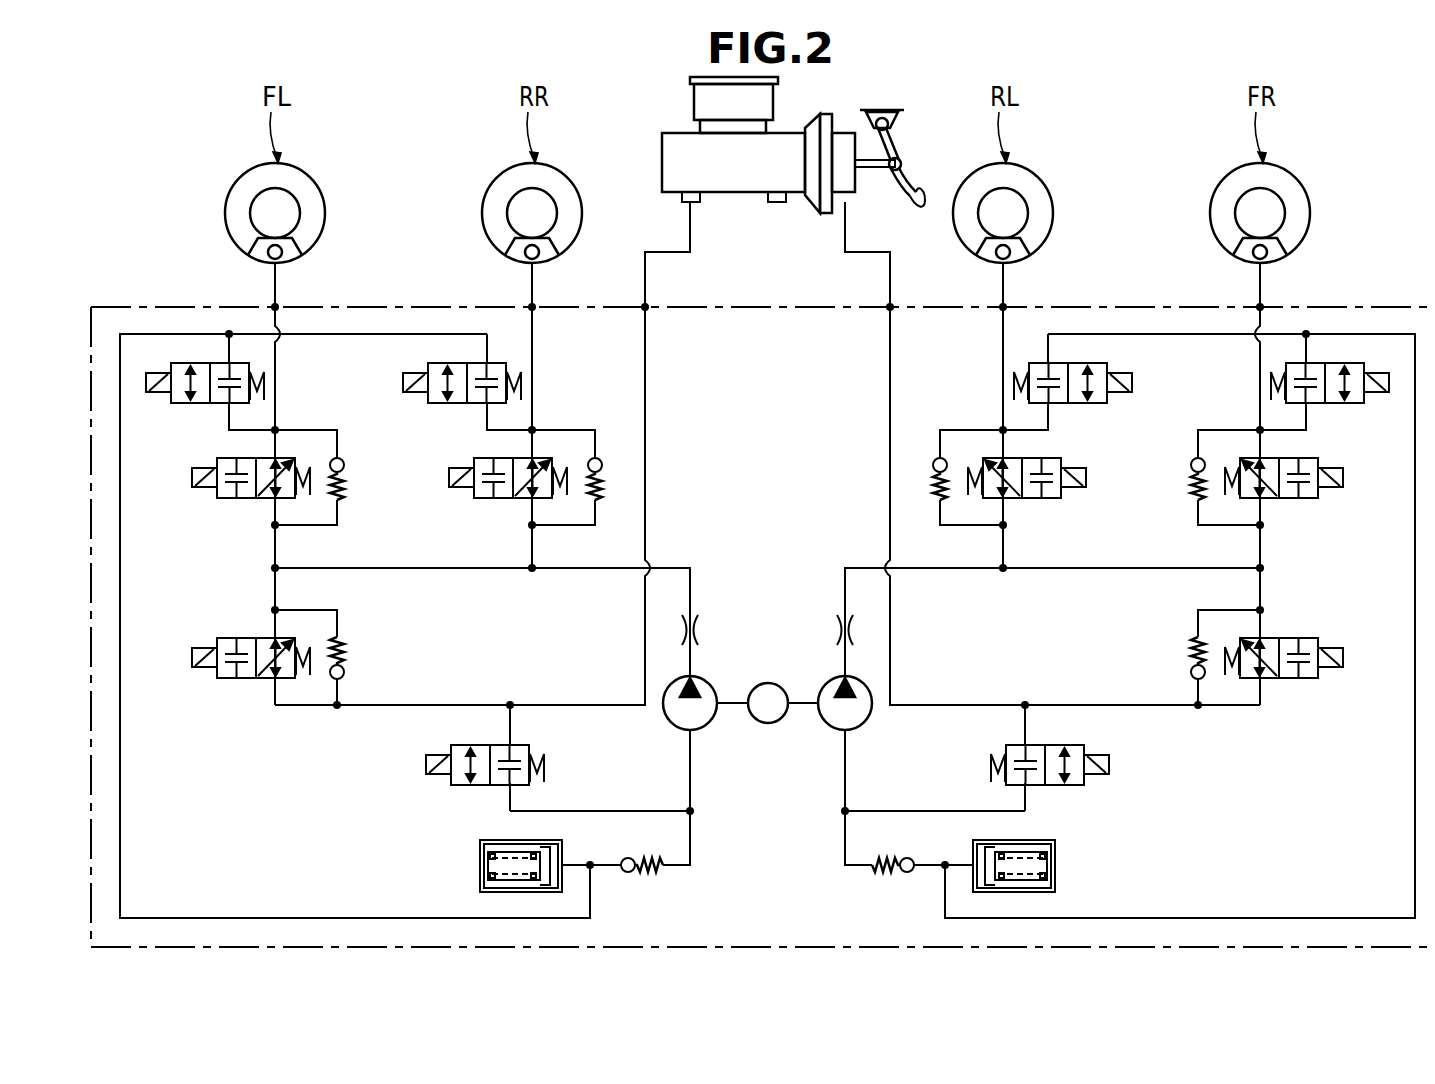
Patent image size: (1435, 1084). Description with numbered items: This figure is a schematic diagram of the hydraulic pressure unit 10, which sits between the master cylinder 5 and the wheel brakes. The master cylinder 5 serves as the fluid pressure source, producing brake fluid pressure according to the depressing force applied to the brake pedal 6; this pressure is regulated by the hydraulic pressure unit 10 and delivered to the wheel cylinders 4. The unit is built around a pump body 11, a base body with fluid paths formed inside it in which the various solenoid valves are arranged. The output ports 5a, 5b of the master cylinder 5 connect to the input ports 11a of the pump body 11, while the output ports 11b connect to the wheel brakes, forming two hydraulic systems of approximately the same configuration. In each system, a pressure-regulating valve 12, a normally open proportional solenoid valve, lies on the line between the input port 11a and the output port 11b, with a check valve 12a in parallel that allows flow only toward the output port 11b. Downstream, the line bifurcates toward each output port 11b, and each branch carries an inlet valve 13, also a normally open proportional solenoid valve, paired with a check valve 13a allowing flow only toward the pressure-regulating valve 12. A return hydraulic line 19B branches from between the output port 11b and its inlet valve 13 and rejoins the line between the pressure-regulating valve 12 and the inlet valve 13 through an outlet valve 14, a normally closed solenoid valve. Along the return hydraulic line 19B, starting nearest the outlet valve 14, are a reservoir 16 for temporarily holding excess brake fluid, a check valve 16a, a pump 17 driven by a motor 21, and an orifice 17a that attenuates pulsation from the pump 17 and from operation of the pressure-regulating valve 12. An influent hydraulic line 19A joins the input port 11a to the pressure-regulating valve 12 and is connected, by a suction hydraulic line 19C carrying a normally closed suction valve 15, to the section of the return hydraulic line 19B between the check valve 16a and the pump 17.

The wheel cylinders 4 is at (268, 253).
The master cylinder 5 is at (678, 139).
The output port 5a is at (697, 203).
The output port 5b is at (782, 203).
The brake pedal 6 is at (920, 195).
The hydraulic pressure unit 10 is at (1391, 290).
The pump body 11 is at (1140, 305).
The input ports 11a is at (647, 305).
The output ports 11b is at (278, 305).
The pressure-regulating valve 12 is at (223, 637).
The check valve 12a is at (346, 649).
The inlet valve 13 is at (226, 499).
The check valve 13a is at (345, 461).
The outlet valve 14 is at (184, 403).
The suction valve 15 is at (460, 785).
The reservoir 16 is at (460, 873).
The check valve 16a is at (640, 878).
The pump 17 is at (706, 730).
The orifice 17a is at (701, 626).
The influent hydraulic line 19A is at (647, 348).
The return hydraulic line 19B is at (121, 787).
The suction hydraulic line 19C is at (599, 811).
The motor 21 is at (768, 723).